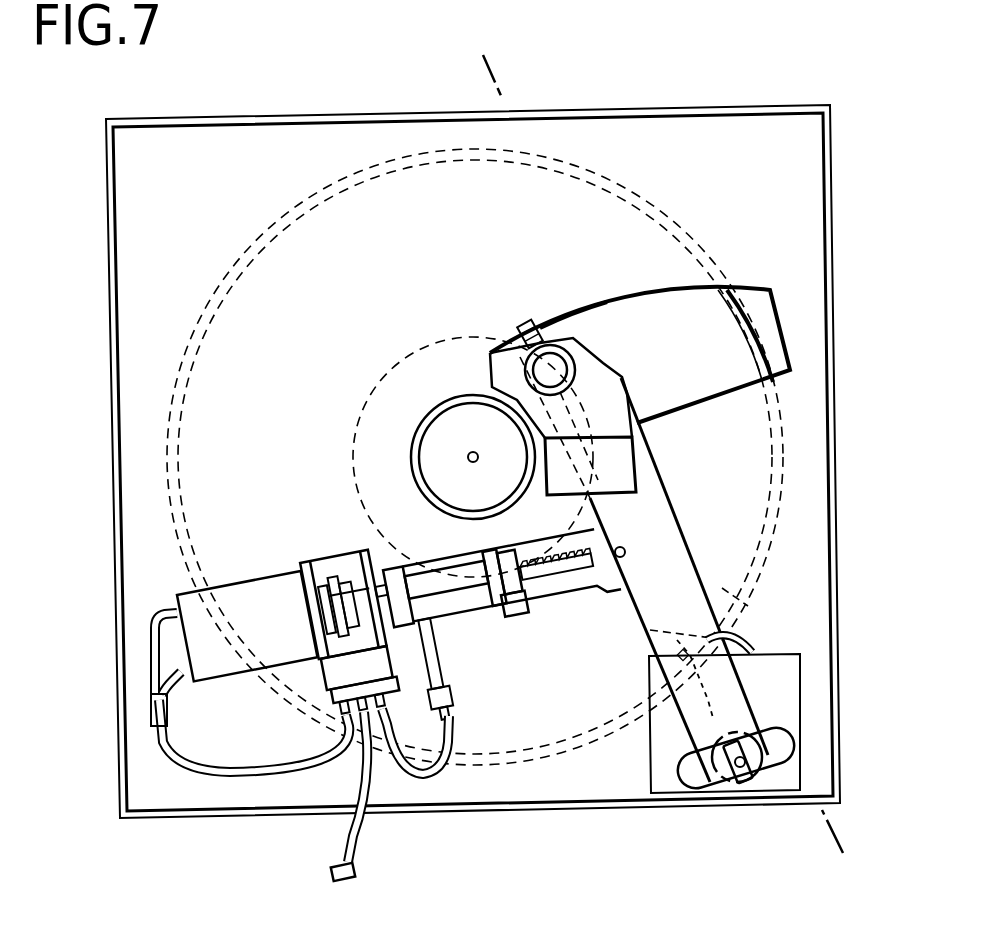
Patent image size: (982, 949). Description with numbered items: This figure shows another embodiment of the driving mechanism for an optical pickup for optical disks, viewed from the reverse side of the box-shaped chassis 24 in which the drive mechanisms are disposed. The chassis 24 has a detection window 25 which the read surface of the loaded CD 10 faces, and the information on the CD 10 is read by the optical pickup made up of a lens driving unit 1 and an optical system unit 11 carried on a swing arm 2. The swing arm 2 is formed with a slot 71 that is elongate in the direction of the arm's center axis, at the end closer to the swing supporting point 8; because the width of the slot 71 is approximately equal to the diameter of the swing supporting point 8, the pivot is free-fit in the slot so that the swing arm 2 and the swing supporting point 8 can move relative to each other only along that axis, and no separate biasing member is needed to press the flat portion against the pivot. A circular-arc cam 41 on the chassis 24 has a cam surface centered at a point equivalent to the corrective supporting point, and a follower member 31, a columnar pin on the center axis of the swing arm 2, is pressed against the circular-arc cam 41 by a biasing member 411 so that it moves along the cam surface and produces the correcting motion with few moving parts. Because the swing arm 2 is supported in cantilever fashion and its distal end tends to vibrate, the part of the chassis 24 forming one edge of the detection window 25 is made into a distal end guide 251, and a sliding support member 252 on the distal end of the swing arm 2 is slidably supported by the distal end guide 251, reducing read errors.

The lens driving unit 1 is at (540, 368).
The swing arm 2 is at (658, 517).
The swing supporting point 8 is at (717, 757).
The CD 10 is at (665, 310).
The optical system unit 11 is at (628, 465).
The chassis 24 is at (183, 142).
The detection window 25 is at (742, 295).
The follower member 31 is at (650, 630).
The circular-arc cam 41 is at (747, 646).
The slot 71 is at (745, 740).
The distal end guide 251 is at (604, 302).
The sliding support member 252 is at (528, 322).
The biasing member 411 is at (668, 688).